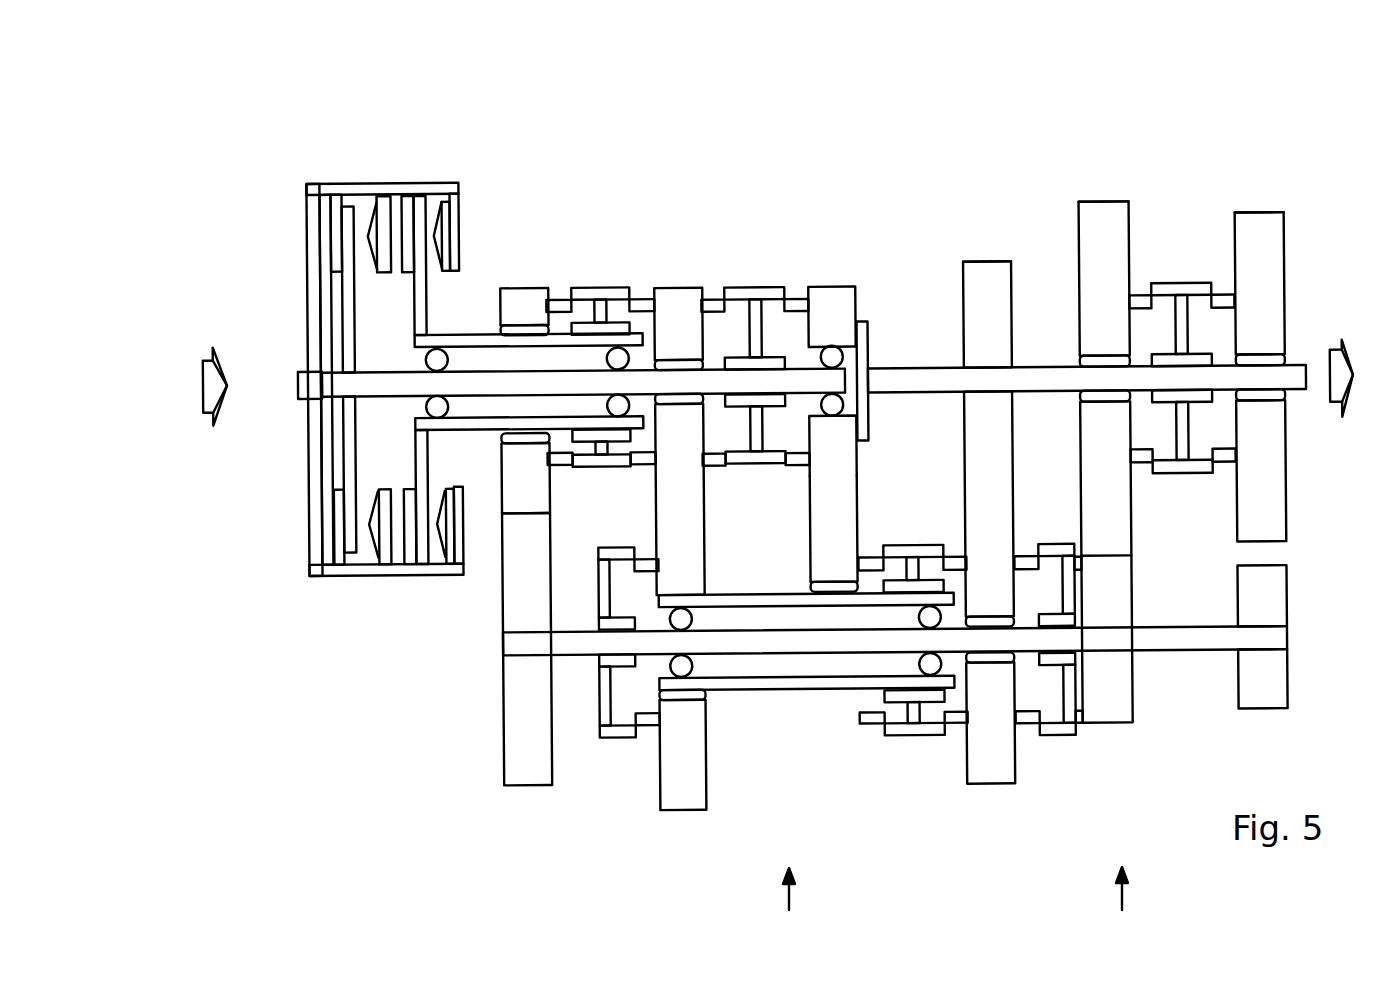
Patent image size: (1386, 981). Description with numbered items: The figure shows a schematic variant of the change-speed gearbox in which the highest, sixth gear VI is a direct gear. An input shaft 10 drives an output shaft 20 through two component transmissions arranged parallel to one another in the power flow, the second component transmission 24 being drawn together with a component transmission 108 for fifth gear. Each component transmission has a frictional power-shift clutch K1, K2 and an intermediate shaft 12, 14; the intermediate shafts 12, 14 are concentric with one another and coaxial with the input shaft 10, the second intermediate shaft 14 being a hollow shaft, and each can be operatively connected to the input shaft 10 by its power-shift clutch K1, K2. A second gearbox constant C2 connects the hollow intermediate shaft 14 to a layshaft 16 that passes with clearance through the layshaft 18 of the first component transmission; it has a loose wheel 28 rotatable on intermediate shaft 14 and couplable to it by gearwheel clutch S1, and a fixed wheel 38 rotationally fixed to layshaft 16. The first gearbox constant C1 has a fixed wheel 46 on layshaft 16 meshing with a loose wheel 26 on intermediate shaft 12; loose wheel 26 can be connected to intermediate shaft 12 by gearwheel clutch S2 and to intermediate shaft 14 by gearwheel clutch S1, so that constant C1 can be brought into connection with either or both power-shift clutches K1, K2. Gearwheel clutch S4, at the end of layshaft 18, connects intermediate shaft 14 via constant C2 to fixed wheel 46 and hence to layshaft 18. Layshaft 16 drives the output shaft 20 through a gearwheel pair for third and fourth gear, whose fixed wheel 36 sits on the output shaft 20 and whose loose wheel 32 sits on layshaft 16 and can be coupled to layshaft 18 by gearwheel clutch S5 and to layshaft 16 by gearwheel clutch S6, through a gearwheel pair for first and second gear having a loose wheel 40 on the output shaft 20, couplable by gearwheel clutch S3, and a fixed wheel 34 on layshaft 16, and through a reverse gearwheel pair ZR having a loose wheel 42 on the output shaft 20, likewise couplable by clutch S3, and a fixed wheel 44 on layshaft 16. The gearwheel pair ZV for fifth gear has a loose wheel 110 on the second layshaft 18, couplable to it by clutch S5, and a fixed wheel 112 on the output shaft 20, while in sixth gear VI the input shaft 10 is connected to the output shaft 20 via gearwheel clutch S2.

The input shaft 10 is at (310, 387).
The intermediate shaft 12 is at (357, 385).
The intermediate shaft 14 is at (452, 336).
The layshaft 16 is at (585, 643).
The layshaft 18 is at (677, 692).
The output shaft 20 is at (1282, 377).
The second component transmission 24 is at (1122, 908).
The loose wheel 26 is at (678, 453).
The loose wheel 28 is at (537, 480).
The loose wheel 32 is at (987, 532).
The fixed wheel 34 is at (1120, 590).
The fixed wheel 36 is at (985, 352).
The fixed wheel 38 is at (528, 763).
The loose wheel 40 is at (1103, 297).
The loose wheel 42 is at (1258, 245).
The fixed wheel 44 is at (1262, 600).
The fixed wheel 46 is at (683, 762).
The component transmission 108 is at (802, 909).
The loose wheel 110 is at (833, 512).
The fixed wheel 112 is at (832, 463).
The power-shift clutch K1 is at (356, 553).
The power-shift clutch K2 is at (427, 552).
The first gearbox constant C1 is at (680, 265).
The second gearbox constant C2 is at (518, 237).
The gearwheel clutch S1 is at (606, 287).
The gearwheel clutch S2 is at (757, 288).
The gearwheel clutch S3 is at (1184, 283).
The gearwheel clutch S4 is at (623, 740).
The gearwheel clutch S5 is at (905, 737).
The gearwheel clutch S6 is at (1050, 737).
The gearwheel pair ZV is at (843, 261).
The gearwheel pair ZR is at (1259, 188).
The sixth gear VI is at (948, 318).